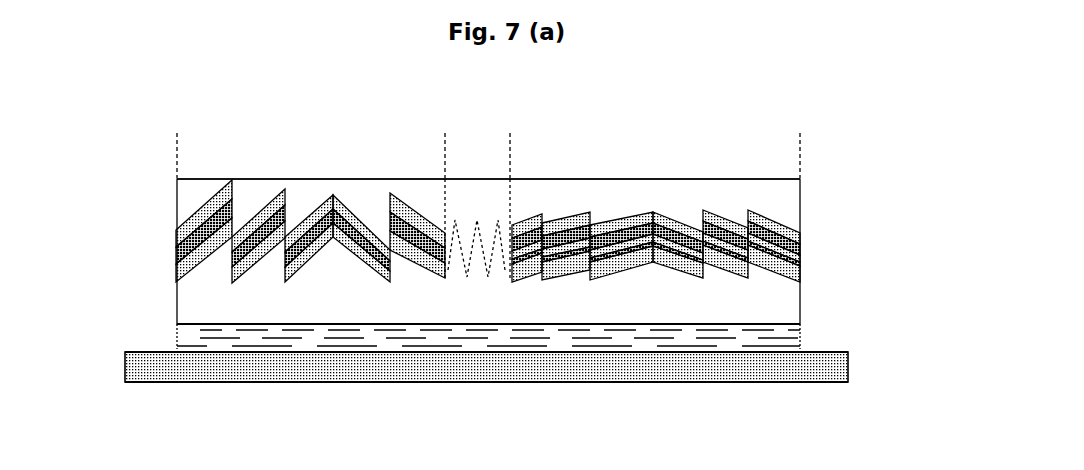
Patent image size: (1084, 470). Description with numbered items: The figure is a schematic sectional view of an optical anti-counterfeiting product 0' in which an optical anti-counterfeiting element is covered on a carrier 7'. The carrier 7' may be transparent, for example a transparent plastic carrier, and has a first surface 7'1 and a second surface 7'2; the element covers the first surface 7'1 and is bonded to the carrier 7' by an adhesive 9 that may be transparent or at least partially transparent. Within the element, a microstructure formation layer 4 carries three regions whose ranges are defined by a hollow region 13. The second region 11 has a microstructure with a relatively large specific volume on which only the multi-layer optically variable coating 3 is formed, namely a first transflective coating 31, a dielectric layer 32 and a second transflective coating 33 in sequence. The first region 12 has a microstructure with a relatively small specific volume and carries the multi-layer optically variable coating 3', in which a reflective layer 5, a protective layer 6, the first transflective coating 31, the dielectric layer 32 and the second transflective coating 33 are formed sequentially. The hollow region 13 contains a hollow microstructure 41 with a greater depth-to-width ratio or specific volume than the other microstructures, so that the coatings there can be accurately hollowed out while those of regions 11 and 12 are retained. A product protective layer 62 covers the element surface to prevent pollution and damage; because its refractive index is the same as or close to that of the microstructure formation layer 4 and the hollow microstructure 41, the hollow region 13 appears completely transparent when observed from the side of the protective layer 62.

The optical anti-counterfeiting product 0' is at (496, 243).
The second region 11 is at (445, 118).
The first region 12 is at (800, 118).
The hollow region 13 is at (510, 118).
The multi-layer optically variable coating 3 is at (257, 250).
The second transflective coating 33 is at (176, 230).
The dielectric layer 32 is at (176, 249).
The first transflective coating 31 is at (176, 268).
The multi-layer optically variable coating 3' is at (714, 252).
The protective layer 6 is at (800, 263).
The reflective layer 5 is at (800, 277).
The microstructure formation layer 4 is at (767, 298).
The product protective layer 62 is at (783, 199).
The hollow microstructure 41 is at (498, 283).
The adhesive 9 is at (190, 337).
The carrier 7' is at (531, 368).
The first surface 7'1 is at (531, 336).
The second surface 7'2 is at (531, 398).